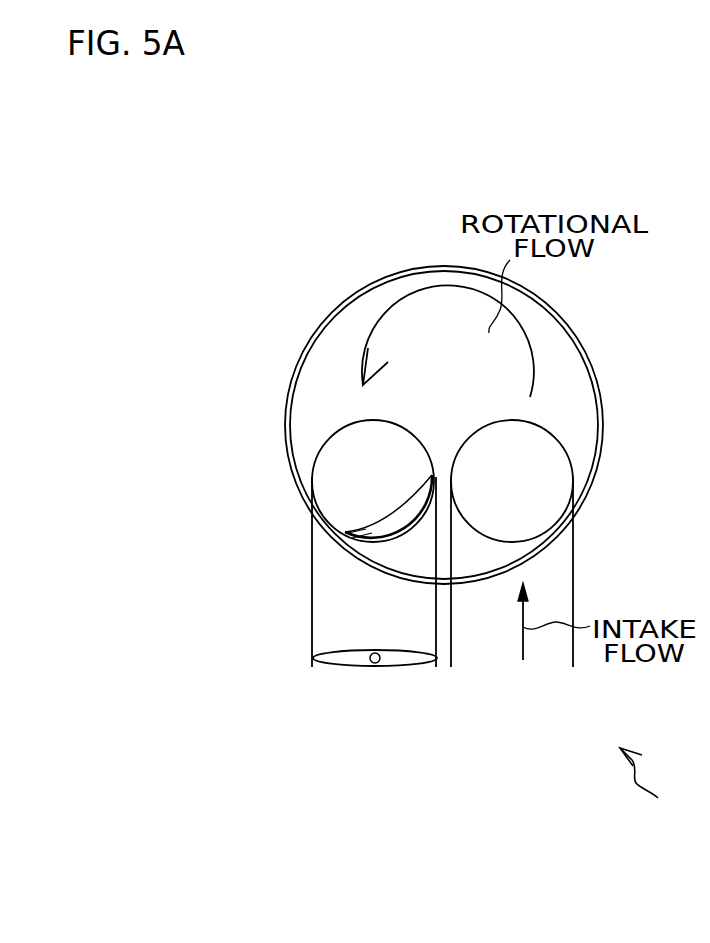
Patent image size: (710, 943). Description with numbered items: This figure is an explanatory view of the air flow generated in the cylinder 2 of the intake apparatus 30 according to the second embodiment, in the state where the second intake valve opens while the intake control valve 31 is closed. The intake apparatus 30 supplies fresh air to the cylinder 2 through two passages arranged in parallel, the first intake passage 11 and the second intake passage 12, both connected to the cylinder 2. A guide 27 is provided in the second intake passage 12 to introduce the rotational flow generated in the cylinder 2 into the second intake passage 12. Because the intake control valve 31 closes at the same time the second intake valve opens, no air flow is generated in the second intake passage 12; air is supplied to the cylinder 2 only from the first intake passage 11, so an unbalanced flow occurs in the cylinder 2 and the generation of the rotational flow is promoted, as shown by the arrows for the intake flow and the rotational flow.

The cylinder 2 is at (345, 333).
The first intake passage 11 is at (566, 555).
The second intake passage 12 is at (328, 577).
The guide 27 is at (340, 542).
The intake apparatus 30 is at (656, 784).
The intake control valve 31 is at (330, 660).